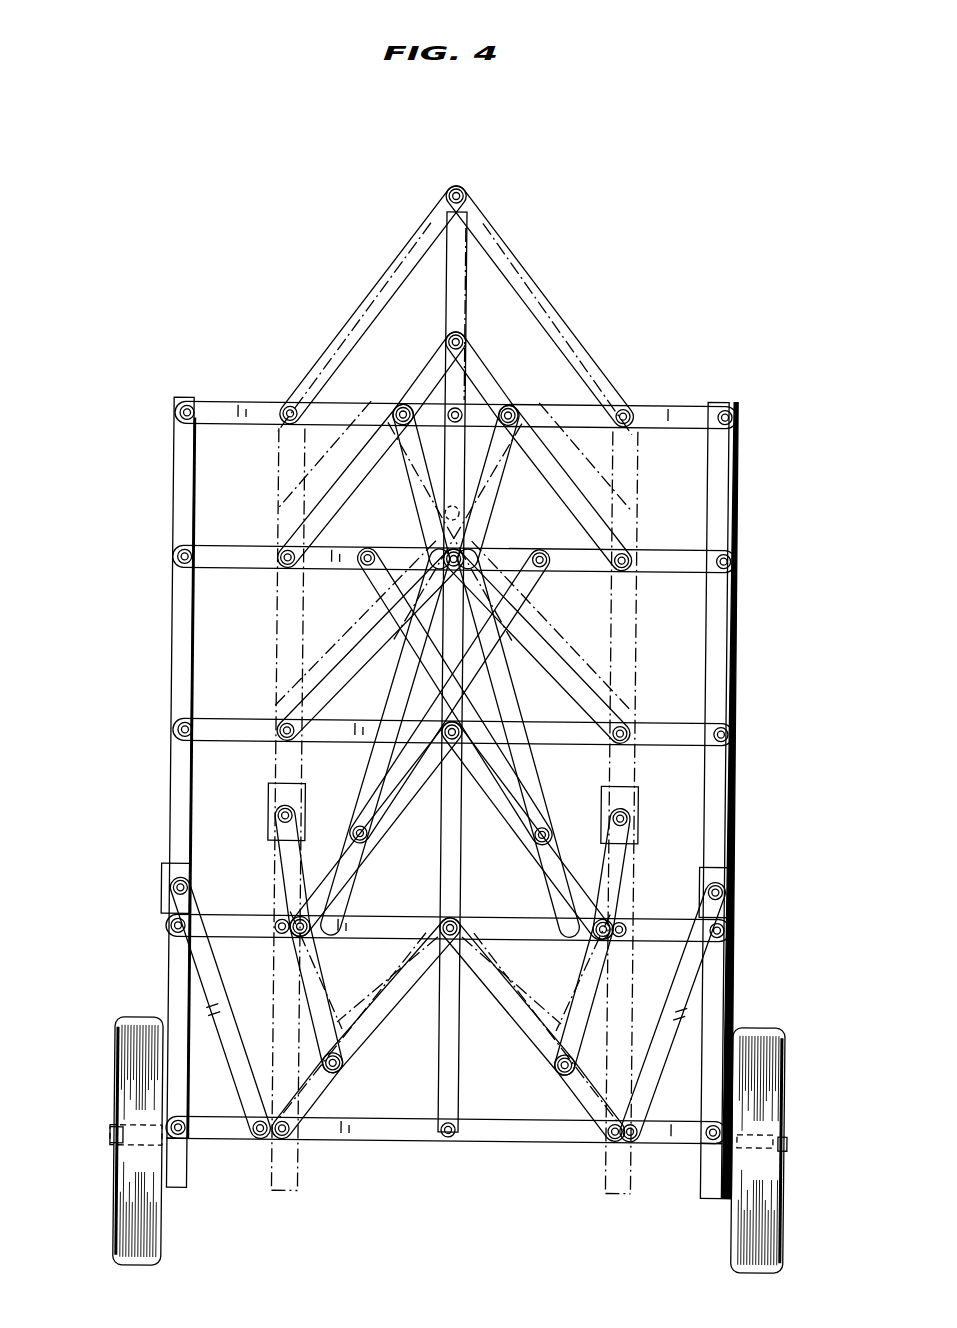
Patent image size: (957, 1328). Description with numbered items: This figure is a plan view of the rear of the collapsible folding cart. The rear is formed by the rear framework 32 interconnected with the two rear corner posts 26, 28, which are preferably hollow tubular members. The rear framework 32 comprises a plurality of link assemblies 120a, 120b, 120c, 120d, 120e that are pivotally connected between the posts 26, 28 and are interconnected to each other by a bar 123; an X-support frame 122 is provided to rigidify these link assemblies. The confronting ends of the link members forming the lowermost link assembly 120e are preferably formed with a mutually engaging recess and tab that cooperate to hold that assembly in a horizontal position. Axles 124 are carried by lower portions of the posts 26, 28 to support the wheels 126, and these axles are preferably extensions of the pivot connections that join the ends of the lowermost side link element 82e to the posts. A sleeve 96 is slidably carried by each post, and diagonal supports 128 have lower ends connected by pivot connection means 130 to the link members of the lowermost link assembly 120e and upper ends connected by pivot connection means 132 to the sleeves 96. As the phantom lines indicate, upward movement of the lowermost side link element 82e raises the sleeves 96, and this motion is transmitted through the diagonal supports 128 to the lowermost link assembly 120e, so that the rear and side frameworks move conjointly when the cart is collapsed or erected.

The rear corner post 26 is at (176, 486).
The rear corner post 28 is at (726, 530).
The rear framework 32 is at (562, 310).
The link element 82e is at (170, 1150).
The sleeve 96 is at (166, 882).
The link assembly 120a is at (664, 415).
The link assembly 120b is at (660, 556).
The link assembly 120c is at (660, 730).
The link assembly 120d is at (655, 918).
The link assembly 120e is at (520, 1142).
The X-support frame 122 is at (366, 838).
The bar 123 is at (458, 866).
The axle 124 is at (132, 1121).
The wheel 126 is at (122, 1222).
The diagonal support 128 is at (207, 985).
The pivot connection means 130 is at (258, 1142).
The pivot connection means 132 is at (188, 886).